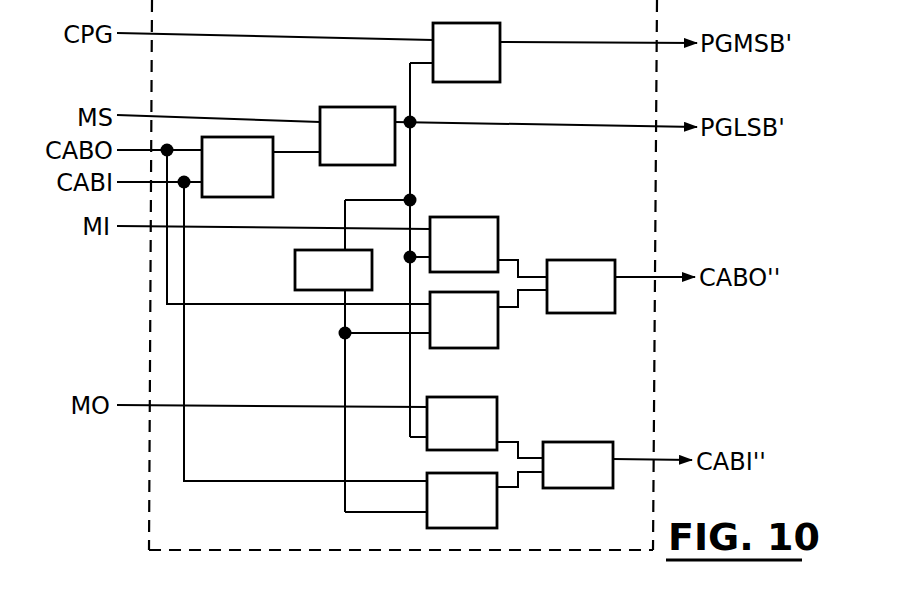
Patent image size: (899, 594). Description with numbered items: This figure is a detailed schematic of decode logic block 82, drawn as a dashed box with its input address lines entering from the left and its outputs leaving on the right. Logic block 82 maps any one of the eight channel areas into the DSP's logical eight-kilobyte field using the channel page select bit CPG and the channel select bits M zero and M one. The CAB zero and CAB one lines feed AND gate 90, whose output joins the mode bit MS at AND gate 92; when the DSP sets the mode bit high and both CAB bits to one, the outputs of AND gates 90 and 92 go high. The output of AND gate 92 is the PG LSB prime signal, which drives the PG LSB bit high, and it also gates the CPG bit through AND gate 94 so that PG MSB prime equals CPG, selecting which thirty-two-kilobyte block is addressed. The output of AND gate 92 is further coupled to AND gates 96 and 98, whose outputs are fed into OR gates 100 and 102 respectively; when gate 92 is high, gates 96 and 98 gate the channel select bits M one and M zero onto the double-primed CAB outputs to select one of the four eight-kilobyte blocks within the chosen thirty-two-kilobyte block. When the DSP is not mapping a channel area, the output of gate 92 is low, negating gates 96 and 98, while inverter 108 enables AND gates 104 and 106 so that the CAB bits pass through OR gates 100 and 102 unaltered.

The logic block 82 is at (653, 372).
The AND gate 90 is at (273, 172).
The AND gate 92 is at (358, 107).
The AND gate 94 is at (500, 68).
The AND gate 96 is at (480, 217).
The AND gate 98 is at (497, 404).
The OR gate 100 is at (573, 260).
The OR gate 102 is at (597, 442).
The AND gate 104 is at (498, 340).
The AND gate 106 is at (497, 515).
The inverter 108 is at (295, 270).